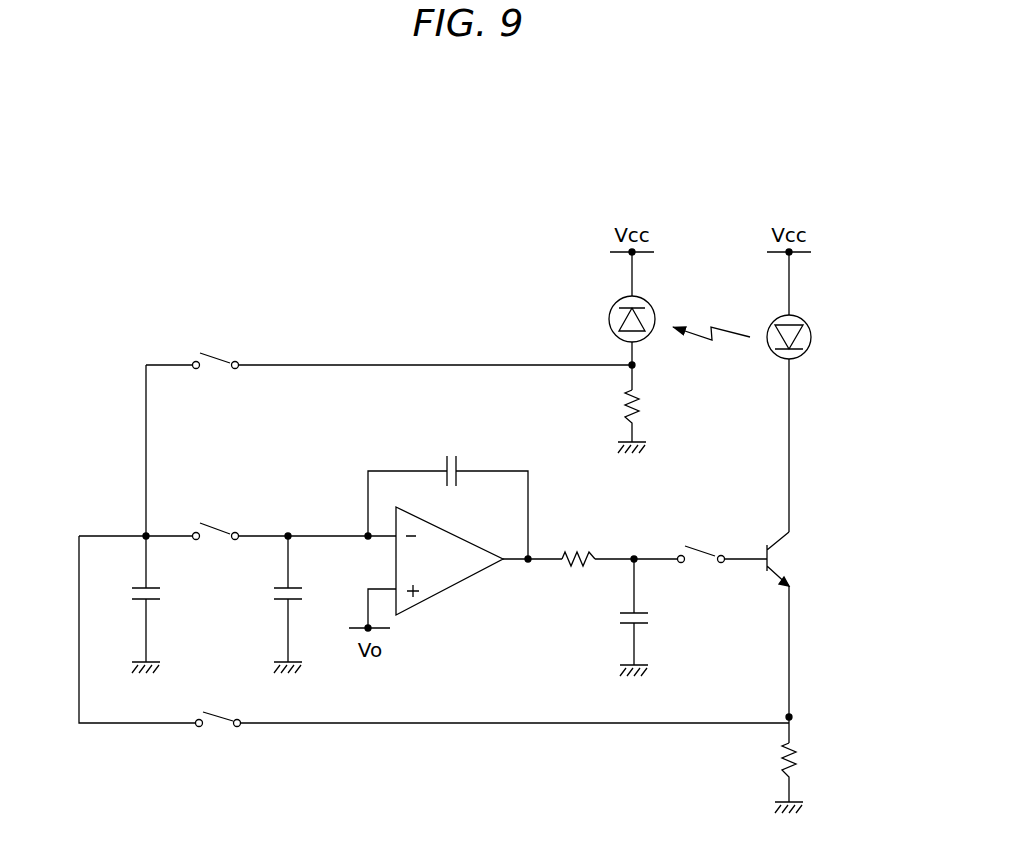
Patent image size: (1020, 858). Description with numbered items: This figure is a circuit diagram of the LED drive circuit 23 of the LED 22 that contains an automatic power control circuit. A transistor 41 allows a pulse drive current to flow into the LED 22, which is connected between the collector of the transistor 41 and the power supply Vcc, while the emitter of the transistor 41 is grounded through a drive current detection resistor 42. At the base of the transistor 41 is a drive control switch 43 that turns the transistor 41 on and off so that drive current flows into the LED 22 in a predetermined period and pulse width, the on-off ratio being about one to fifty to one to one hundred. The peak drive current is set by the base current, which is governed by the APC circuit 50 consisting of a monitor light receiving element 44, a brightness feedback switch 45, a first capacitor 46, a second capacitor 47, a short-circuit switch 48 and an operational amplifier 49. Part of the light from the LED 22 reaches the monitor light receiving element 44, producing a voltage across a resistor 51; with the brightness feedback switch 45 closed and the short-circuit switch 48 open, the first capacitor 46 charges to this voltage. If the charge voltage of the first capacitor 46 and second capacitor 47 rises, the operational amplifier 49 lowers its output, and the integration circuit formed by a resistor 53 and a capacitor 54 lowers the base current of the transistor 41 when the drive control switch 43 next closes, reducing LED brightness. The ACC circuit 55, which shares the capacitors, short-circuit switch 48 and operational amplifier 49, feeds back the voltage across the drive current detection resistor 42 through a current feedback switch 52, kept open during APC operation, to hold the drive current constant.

The LED 22 is at (810, 330).
The LED drive circuit 23 is at (758, 174).
The transistor 41 is at (776, 535).
The drive current detection resistor 42 is at (800, 755).
The drive control switch 43 is at (698, 567).
The monitor light receiving element 44 is at (612, 310).
The brightness feedback switch 45 is at (218, 352).
The first capacitor 46 is at (160, 605).
The second capacitor 47 is at (278, 605).
The short-circuit switch 48 is at (218, 522).
The operational amplifier 49 is at (460, 541).
The APC circuit 50 is at (473, 282).
The resistor 51 is at (642, 412).
The current feedback switch 52 is at (212, 730).
The resistor 53 is at (580, 553).
The capacitor 54 is at (620, 628).
The ACC circuit 55 is at (420, 772).